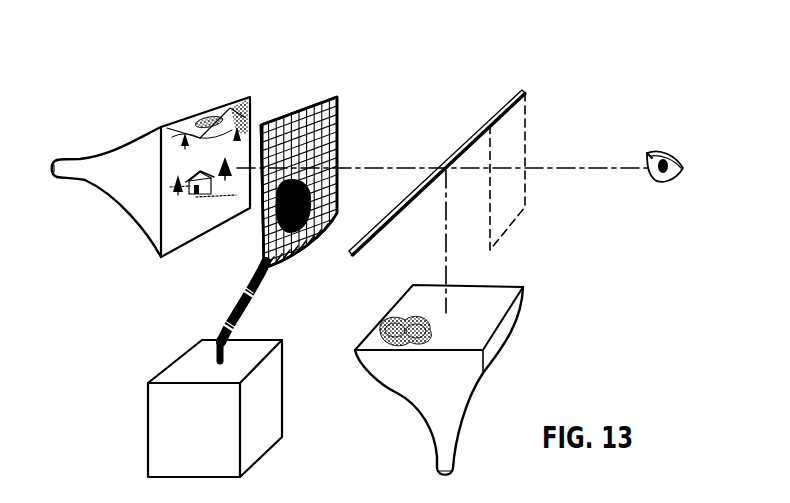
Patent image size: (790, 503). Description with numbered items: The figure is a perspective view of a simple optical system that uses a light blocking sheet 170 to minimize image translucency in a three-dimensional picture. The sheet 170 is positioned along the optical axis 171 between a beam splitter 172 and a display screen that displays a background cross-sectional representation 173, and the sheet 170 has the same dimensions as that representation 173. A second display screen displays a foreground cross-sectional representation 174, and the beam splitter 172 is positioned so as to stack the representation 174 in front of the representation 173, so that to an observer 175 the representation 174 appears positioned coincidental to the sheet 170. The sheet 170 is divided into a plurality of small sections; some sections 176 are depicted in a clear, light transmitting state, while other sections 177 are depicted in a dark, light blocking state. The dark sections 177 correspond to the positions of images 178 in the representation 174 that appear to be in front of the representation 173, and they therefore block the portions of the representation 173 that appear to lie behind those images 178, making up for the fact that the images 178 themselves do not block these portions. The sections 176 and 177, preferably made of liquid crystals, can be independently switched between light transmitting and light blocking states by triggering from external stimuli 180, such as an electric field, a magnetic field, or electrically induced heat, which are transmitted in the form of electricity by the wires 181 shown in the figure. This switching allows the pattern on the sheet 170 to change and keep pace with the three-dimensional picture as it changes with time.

The light blocking sheet 170 is at (335, 90).
The optical axis 171 is at (577, 168).
The beam splitter 172 is at (503, 103).
The background cross-sectional representation 173 is at (172, 233).
The foreground cross-sectional representation 174 is at (498, 297).
The observer 175 is at (680, 162).
The clear sections 176 is at (338, 139).
The dark sections 177 is at (313, 197).
The images 178 is at (418, 318).
The external stimuli 180 is at (212, 438).
The wires 181 is at (227, 315).